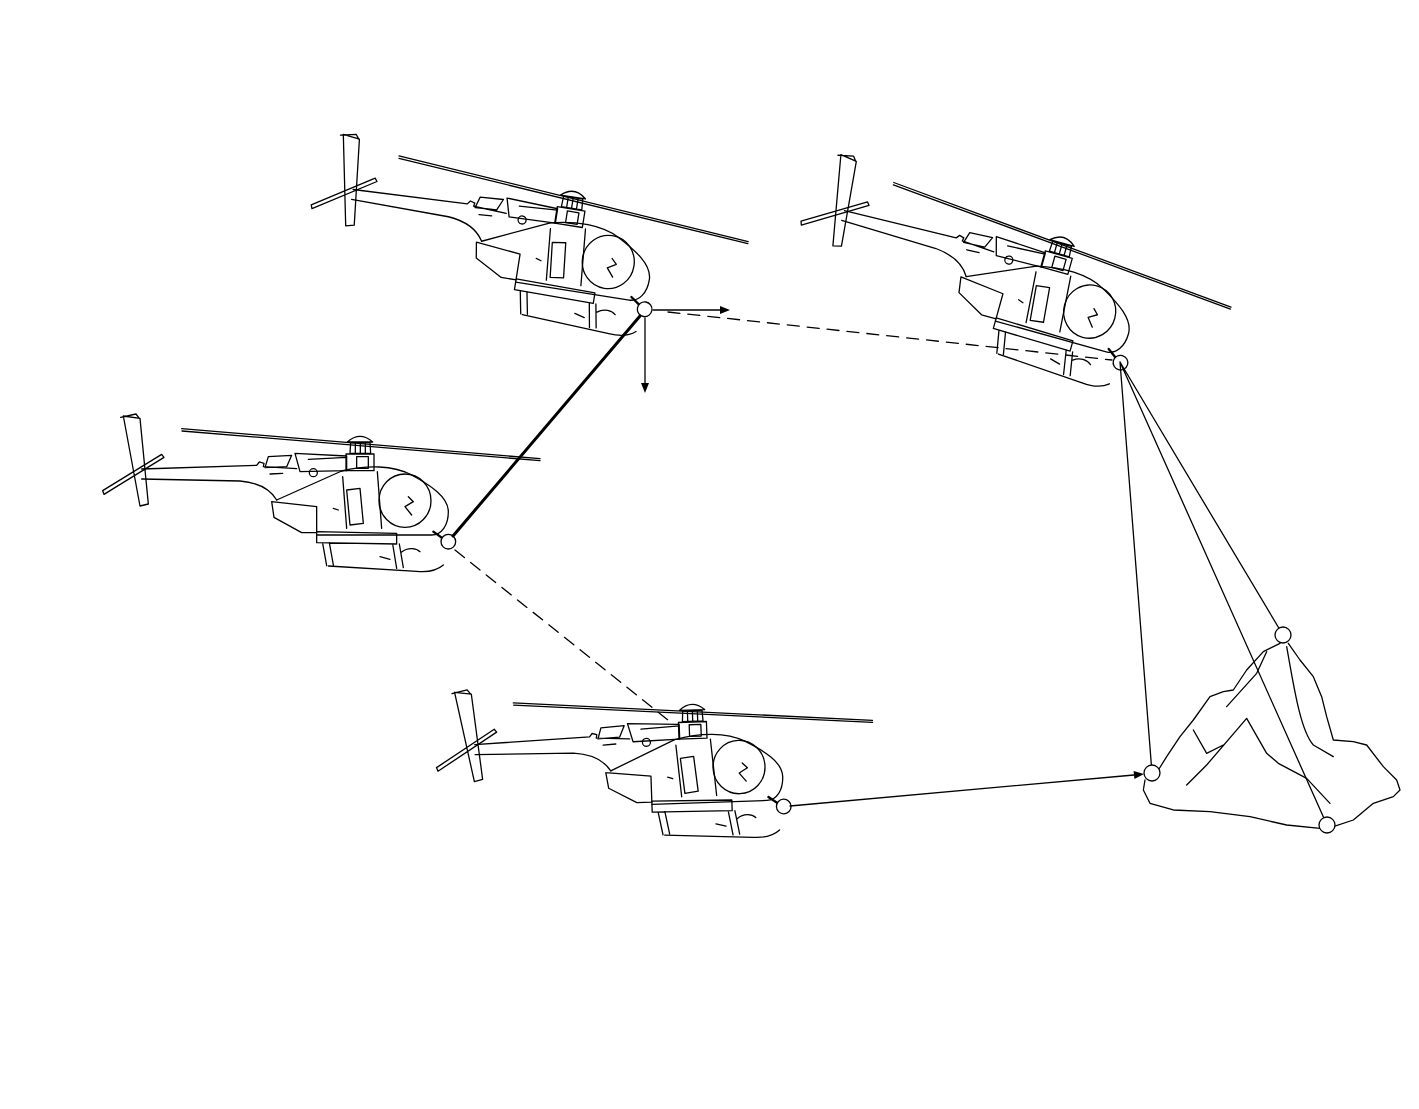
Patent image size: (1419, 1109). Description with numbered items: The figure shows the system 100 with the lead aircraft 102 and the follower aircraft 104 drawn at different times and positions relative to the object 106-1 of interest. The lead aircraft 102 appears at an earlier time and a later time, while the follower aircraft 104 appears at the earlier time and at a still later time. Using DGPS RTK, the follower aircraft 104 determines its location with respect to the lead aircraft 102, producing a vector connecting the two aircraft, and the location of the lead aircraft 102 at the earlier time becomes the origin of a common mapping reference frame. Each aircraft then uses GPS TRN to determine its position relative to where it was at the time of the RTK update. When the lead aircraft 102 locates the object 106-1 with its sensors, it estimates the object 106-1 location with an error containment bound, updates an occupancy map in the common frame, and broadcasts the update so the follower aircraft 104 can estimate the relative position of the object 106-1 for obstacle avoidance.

The system 100 is at (283, 100).
The lead aircraft 102 is at (578, 193).
The follower aircraft 104 is at (364, 432).
The object of interest 106-1 is at (1302, 658).